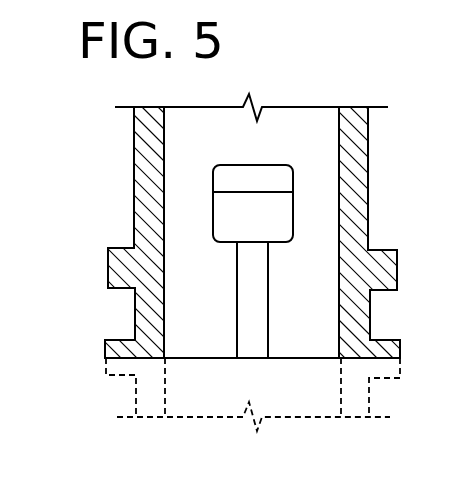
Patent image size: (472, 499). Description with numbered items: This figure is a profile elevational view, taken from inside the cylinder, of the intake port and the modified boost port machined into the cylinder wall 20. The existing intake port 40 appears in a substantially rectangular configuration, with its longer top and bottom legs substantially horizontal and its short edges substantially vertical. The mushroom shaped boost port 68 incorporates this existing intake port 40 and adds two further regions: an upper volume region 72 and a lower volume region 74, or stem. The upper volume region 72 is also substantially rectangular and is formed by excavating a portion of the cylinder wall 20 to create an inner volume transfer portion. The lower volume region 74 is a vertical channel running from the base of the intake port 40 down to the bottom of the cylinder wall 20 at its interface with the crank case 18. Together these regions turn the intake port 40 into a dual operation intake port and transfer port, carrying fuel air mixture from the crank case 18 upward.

The cylinder wall 20 is at (145, 133).
The boost port 68 is at (247, 172).
The upper volume region 72 is at (227, 180).
The intake port 40 is at (180, 192).
The lower volume region 74 is at (247, 292).
The crank case 18 is at (165, 394).